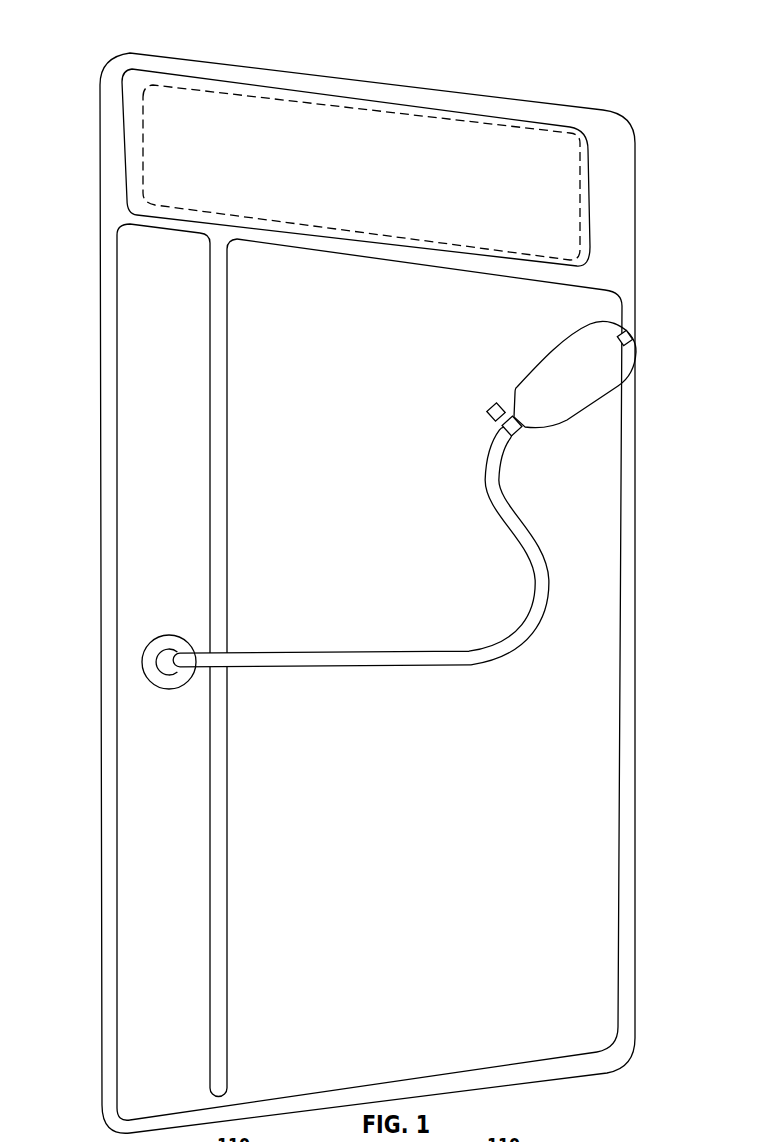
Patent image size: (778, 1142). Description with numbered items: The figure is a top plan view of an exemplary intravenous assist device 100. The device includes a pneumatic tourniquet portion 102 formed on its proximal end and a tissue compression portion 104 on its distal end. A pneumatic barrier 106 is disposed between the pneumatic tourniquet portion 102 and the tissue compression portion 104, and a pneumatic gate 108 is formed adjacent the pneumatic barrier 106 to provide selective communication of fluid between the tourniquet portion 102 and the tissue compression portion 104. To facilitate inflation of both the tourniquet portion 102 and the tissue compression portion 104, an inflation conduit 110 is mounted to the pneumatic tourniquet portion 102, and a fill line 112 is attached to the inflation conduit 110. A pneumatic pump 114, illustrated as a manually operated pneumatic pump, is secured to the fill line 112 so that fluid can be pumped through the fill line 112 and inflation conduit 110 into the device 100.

The intravenous assist device 100 is at (555, 88).
The pneumatic tourniquet portion 102 is at (117, 297).
The tissue compression portion 104 is at (623, 548).
The pneumatic barrier 106 is at (220, 512).
The pneumatic gate 108 is at (207, 1105).
The inflation conduit 110 is at (158, 651).
The fill line 112 is at (333, 668).
The pneumatic pump 114 is at (592, 405).